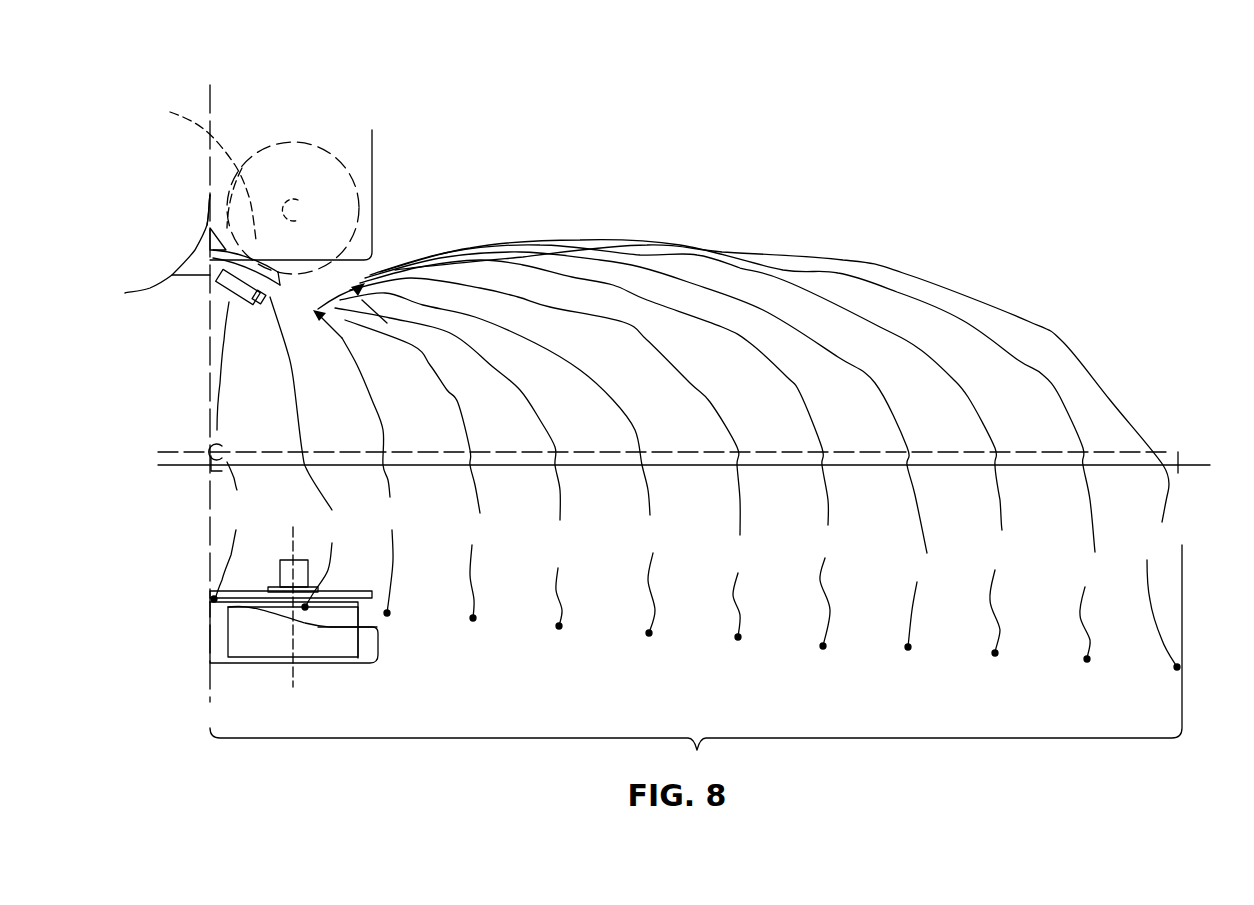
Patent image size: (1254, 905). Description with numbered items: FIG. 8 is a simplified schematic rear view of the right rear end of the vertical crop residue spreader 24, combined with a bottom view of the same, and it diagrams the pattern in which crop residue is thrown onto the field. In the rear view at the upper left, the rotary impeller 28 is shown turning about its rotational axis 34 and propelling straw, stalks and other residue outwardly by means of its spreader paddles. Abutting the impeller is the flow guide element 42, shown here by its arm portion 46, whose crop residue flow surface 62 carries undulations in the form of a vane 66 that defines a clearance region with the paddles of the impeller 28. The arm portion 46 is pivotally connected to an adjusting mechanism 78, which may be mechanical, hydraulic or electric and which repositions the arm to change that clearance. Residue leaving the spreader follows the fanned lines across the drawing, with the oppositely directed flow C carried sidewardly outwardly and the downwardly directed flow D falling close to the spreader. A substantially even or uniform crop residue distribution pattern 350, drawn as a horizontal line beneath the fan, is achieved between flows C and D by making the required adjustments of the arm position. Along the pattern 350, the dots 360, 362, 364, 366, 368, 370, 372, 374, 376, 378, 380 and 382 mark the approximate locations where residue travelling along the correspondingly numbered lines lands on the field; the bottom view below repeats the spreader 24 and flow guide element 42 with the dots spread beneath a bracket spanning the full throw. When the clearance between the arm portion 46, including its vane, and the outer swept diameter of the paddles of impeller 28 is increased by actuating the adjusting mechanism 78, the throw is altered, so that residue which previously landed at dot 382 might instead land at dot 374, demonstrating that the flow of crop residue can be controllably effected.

The vertical crop residue spreader 24 is at (374, 164).
The rotary impeller 28 is at (290, 170).
The rotational axis 34 is at (306, 211).
The flow guide element 42 is at (166, 269).
The arm portion 46 is at (252, 255).
The crop residue flow surface 62 is at (209, 193).
The vane 66 is at (170, 112).
The adjusting mechanism 78 is at (217, 297).
The crop residue distribution pattern 350 is at (1112, 450).
The dot 360 is at (237, 452).
The dot 362 is at (311, 453).
The dot 364 is at (377, 477).
The dot 366 is at (421, 470).
The dot 368 is at (458, 468).
The dot 370 is at (507, 464).
The dot 372 is at (556, 459).
The dot 374 is at (606, 454).
The dot 376 is at (653, 451).
The dot 378 is at (697, 450).
The dot 380 is at (745, 451).
The dot 382 is at (787, 457).
The oppositely directed flow arrows C is at (1159, 438).
The downwardly directed flow arrows D is at (212, 414).